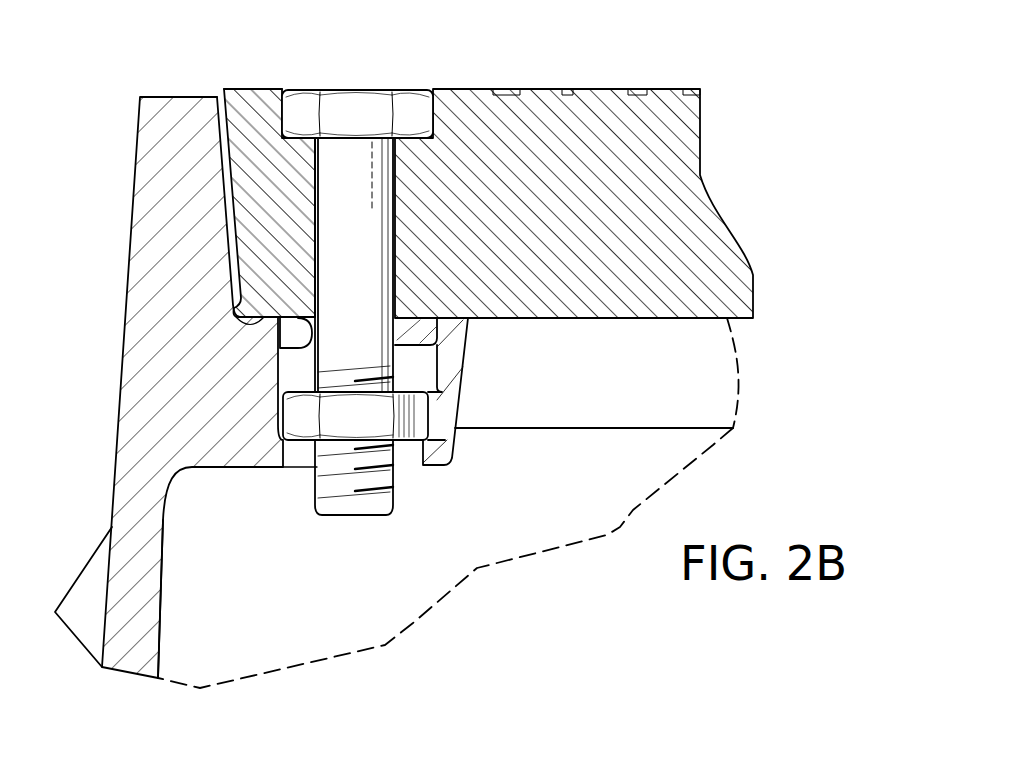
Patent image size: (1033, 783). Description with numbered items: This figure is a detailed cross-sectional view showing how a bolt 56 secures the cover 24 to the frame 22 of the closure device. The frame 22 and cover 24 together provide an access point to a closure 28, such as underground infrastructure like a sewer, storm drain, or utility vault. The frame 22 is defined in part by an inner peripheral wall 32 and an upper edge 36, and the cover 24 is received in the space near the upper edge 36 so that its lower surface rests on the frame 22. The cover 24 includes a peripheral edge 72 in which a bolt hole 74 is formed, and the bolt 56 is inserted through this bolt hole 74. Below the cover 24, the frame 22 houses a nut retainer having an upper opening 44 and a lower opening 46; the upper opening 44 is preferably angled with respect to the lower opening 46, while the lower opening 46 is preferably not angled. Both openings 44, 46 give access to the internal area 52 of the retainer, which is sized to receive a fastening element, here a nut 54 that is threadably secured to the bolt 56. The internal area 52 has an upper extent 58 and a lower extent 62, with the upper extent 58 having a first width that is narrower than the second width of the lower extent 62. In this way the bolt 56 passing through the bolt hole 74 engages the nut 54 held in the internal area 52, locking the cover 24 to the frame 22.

The frame 22 is at (136, 292).
The cover 24 is at (683, 137).
The closure 28 is at (621, 499).
The inner peripheral wall 32 is at (163, 602).
The upper edge 36 is at (148, 93).
The upper opening 44 is at (400, 331).
The lower opening 46 is at (297, 468).
The internal area 52 is at (422, 374).
The nut 54 is at (423, 415).
The bolt 56 is at (362, 105).
The upper extent 58 is at (300, 348).
The lower extent 62 is at (275, 434).
The peripheral edge 72 is at (233, 100).
The bolt hole 74 is at (285, 91).